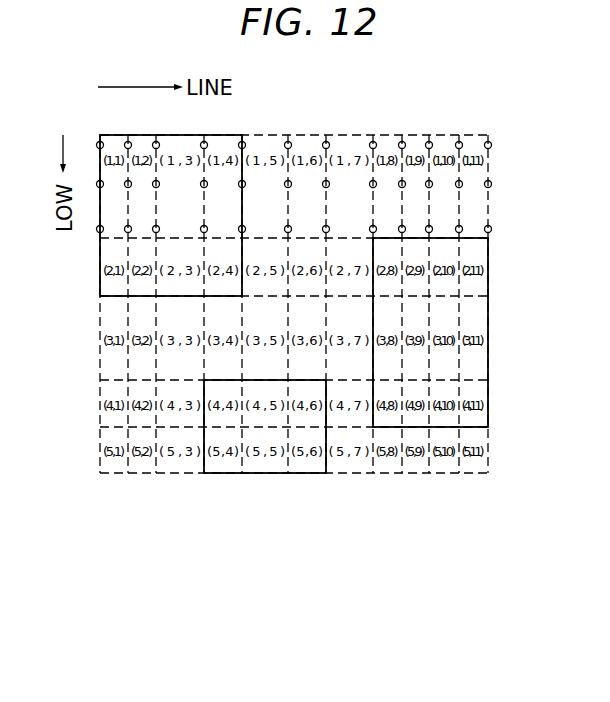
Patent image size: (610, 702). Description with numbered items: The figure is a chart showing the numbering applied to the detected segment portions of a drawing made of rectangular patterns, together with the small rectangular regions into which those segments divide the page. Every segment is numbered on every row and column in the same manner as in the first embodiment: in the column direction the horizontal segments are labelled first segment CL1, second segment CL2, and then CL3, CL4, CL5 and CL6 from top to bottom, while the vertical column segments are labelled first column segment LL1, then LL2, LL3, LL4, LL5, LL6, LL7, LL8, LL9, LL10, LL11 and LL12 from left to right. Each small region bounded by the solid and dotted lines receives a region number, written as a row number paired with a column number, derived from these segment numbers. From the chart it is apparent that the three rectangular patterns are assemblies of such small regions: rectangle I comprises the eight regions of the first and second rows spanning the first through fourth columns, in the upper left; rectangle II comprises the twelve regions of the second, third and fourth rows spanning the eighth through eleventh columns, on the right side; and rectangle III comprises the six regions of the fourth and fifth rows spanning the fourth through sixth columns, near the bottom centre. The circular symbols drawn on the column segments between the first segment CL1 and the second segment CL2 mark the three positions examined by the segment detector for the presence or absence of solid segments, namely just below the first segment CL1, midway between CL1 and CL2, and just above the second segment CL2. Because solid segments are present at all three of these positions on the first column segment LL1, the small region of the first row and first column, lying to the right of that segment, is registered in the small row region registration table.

The rectangular pattern I is at (127, 134).
The rectangular pattern II is at (488, 338).
The rectangular pattern III is at (245, 474).
The first segment in the column direction CL1 is at (507, 135).
The second segment in the column direction CL2 is at (507, 238).
The third segment in the column direction CL3 is at (507, 296).
The fourth segment in the column direction CL4 is at (507, 380).
The fifth segment in the column direction CL5 is at (507, 427).
The sixth segment in the column direction CL6 is at (507, 473).
The first column segment LL1 is at (100, 522).
The second column segment LL2 is at (128, 522).
The third column segment LL3 is at (156, 522).
The fourth column segment LL4 is at (204, 522).
The fifth column segment LL5 is at (242, 522).
The sixth column segment LL6 is at (288, 522).
The seventh column segment LL7 is at (326, 522).
The eighth column segment LL8 is at (373, 522).
The ninth column segment LL9 is at (402, 522).
The tenth column segment LL10 is at (429, 522).
The eleventh column segment LL11 is at (459, 522).
The twelfth column segment LL12 is at (488, 522).